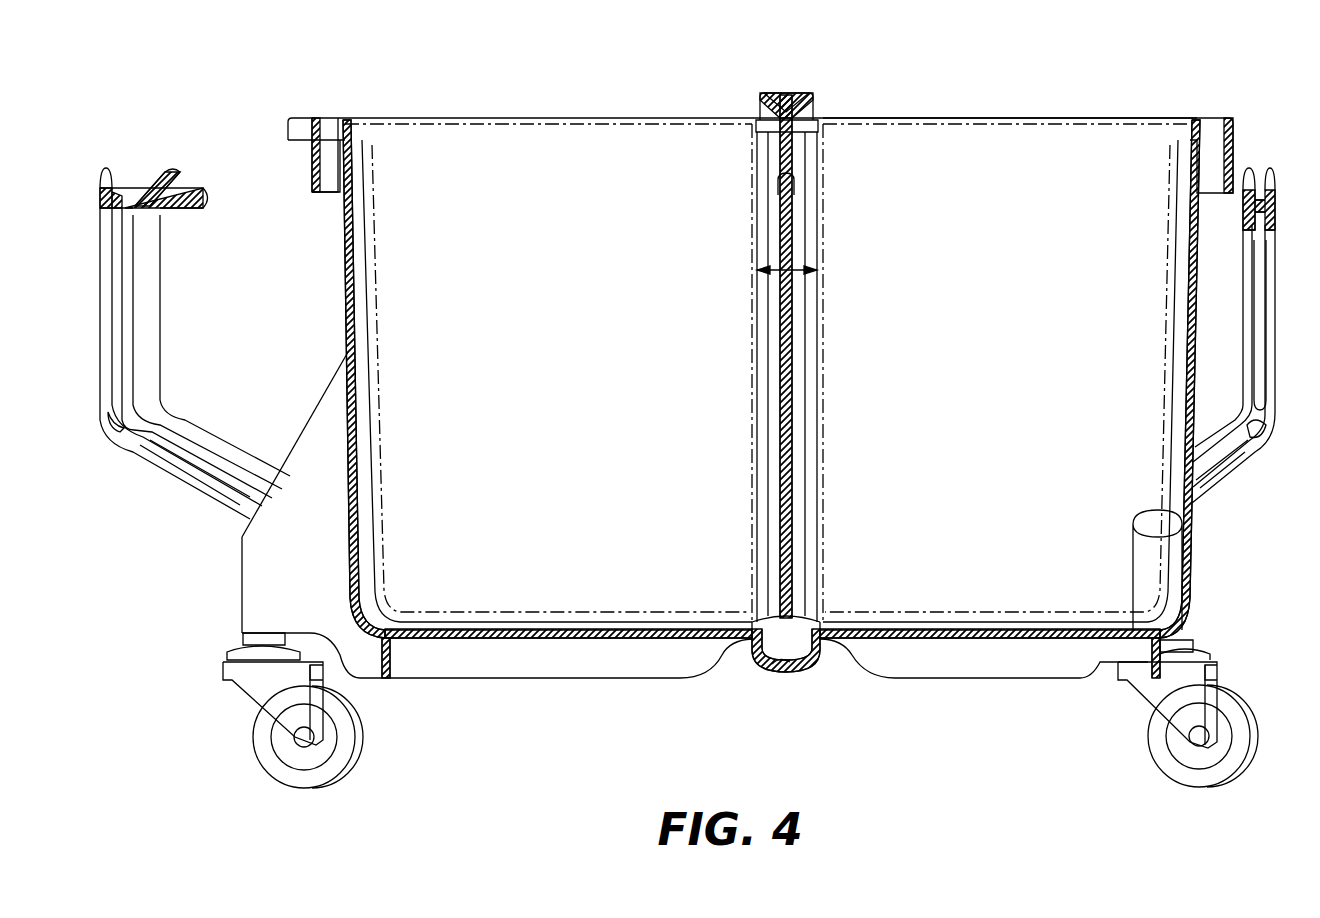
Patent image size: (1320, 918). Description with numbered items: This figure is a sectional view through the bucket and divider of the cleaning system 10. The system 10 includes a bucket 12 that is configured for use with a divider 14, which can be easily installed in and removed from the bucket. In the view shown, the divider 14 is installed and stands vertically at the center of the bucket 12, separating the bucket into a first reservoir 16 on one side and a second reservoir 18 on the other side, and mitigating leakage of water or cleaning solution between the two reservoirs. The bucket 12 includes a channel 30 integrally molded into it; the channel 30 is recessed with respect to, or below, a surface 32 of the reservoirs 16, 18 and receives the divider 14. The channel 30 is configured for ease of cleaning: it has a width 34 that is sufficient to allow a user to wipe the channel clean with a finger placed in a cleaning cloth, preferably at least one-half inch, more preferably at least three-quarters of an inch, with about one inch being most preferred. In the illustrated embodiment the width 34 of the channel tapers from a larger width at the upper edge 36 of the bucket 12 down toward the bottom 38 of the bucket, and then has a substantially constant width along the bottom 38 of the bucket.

The system 10 is at (276, 66).
The bucket 12 is at (432, 118).
The divider 14 is at (785, 84).
The first reservoir 16 is at (547, 366).
The second reservoir 18 is at (977, 366).
The channel 30 is at (784, 668).
The surface 32 is at (360, 232).
The width 34 is at (817, 270).
The upper edge 36 is at (862, 118).
The bottom 38 is at (833, 628).